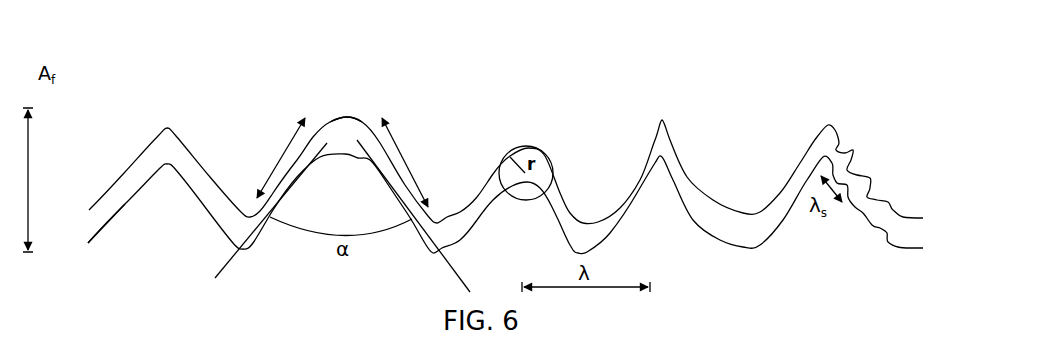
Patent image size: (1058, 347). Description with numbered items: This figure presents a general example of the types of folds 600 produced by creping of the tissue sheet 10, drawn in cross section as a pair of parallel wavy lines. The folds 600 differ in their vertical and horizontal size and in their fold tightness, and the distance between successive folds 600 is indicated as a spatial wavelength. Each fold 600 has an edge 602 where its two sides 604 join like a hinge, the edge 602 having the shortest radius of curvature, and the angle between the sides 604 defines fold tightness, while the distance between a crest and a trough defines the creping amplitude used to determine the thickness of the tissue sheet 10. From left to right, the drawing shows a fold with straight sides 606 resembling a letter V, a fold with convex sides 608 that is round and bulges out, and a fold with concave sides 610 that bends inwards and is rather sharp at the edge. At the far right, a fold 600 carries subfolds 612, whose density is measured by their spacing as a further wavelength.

The folds 600 is at (173, 101).
The edge 602 is at (363, 104).
The sides 604 is at (344, 162).
The straight sides 606 is at (113, 182).
The convex sides 608 is at (493, 172).
The concave sides 610 is at (630, 178).
The subfolds 612 is at (875, 175).
The tissue sheet 10 is at (188, 217).